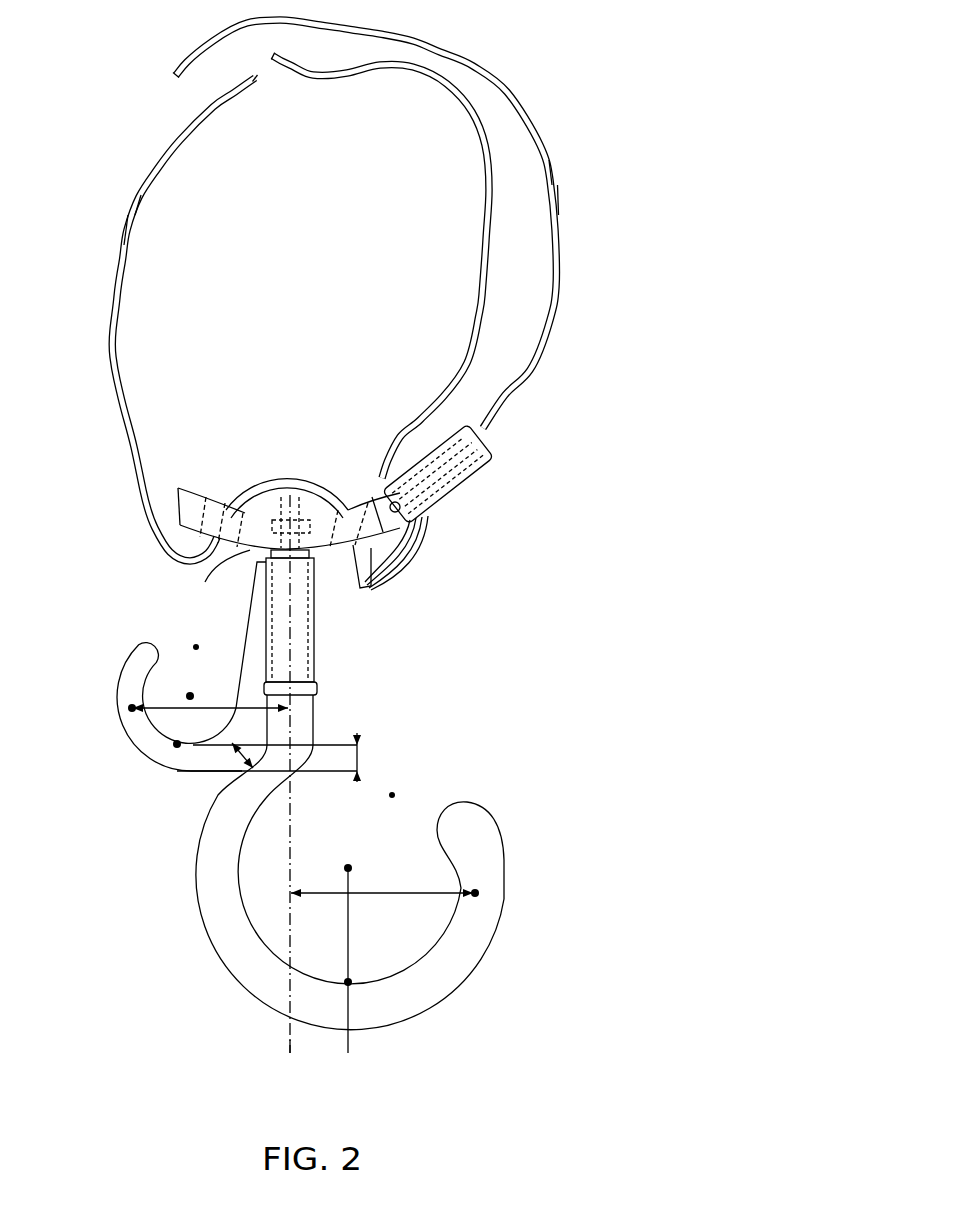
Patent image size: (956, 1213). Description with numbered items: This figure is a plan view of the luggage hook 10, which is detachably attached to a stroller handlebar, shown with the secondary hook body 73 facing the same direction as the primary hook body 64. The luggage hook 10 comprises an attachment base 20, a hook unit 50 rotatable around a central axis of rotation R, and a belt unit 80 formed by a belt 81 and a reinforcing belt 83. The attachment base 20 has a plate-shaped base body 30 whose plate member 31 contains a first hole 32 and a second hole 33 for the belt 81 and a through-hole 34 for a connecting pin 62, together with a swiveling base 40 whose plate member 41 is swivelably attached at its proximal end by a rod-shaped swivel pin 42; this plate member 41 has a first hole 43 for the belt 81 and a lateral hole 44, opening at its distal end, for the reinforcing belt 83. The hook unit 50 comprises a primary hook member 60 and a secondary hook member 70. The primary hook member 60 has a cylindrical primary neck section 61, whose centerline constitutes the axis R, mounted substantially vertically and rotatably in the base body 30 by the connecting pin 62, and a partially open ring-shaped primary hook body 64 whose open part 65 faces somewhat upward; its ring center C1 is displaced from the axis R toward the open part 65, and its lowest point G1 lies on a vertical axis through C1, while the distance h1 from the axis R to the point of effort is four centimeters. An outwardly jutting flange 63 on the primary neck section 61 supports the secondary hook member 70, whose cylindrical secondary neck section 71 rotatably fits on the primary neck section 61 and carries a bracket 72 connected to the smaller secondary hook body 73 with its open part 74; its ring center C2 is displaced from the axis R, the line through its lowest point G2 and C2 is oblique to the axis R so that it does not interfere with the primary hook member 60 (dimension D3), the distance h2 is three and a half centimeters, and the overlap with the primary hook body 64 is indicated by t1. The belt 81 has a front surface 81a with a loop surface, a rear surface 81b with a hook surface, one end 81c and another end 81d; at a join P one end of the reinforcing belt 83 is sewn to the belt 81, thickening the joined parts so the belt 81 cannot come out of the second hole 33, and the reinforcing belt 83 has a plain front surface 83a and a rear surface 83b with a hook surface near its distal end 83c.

The luggage hook 10 is at (685, 130).
The attachment base 20 is at (196, 472).
The base body 30 is at (178, 493).
The plate member 31 is at (243, 562).
The first hole 32 is at (226, 505).
The second hole 33 is at (358, 505).
The through-hole 34 is at (310, 500).
The swiveling base 40 is at (502, 473).
The plate member 41 is at (452, 494).
The swivel pin 42 is at (378, 488).
The first hole 43 is at (402, 462).
The lateral hole 44 is at (483, 443).
The hook unit 50 is at (462, 680).
The primary hook member 60 is at (193, 925).
The primary neck section 61 is at (320, 668).
The connecting pin 62 is at (290, 500).
The flange 63 is at (320, 688).
The primary hook body 64 is at (503, 893).
The open part 65 is at (392, 795).
The secondary hook member 70 is at (112, 758).
The secondary neck section 71 is at (316, 630).
The bracket 72 is at (248, 618).
The secondary hook body 73 is at (128, 708).
The open part 74 is at (196, 645).
The belt unit 80 is at (103, 418).
The belt 81 is at (110, 357).
The front surface 81a is at (124, 230).
The rear surface 81b is at (143, 210).
The one end 81c is at (255, 78).
The other end 81d is at (273, 58).
The reinforcing belt 83 is at (559, 322).
The front surface 83a is at (558, 200).
The rear surface 83b is at (541, 180).
The distal end 83c is at (176, 72).
The join P is at (373, 585).
The central axis of rotation R is at (289, 1063).
The ring center position C1 is at (349, 943).
The lowest point G1 is at (337, 966).
The distance h1 is at (385, 878).
The ring center position C2 is at (191, 679).
The lowest point G2 is at (178, 729).
The distance h2 is at (210, 697).
The thickness t1 is at (280, 757).
The dimension D3 is at (233, 763).